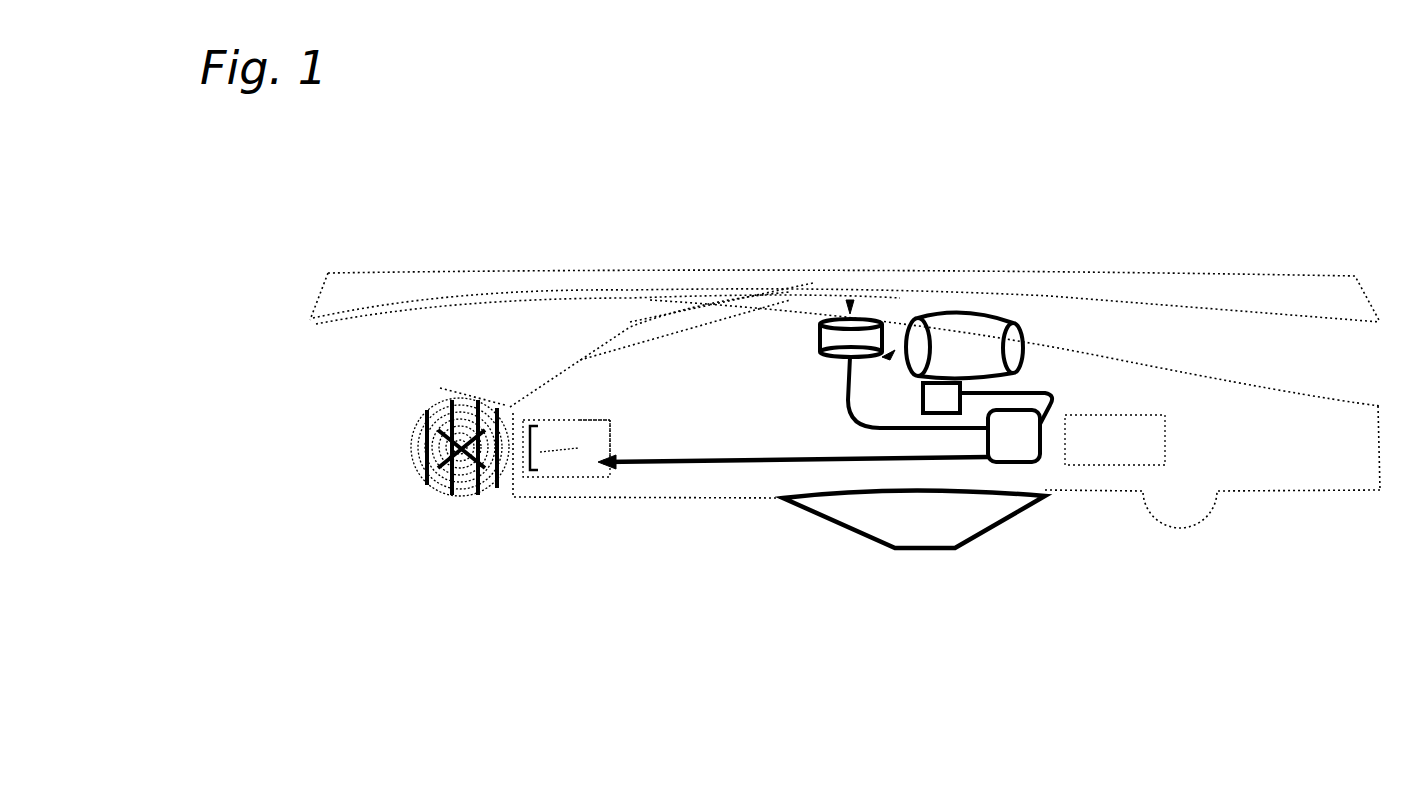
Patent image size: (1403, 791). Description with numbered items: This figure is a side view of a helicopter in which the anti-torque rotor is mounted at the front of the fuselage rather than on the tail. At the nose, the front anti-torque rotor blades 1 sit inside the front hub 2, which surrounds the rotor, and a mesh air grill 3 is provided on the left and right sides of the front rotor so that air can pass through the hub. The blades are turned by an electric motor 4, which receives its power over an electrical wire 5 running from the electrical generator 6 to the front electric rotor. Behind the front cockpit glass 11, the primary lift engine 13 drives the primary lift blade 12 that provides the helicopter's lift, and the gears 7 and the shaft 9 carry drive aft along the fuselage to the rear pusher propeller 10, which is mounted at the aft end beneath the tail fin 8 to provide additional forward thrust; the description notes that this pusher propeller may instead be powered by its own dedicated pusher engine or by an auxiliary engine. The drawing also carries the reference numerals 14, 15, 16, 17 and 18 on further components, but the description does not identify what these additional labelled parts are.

The front anti-torque rotor blades 1 is at (418, 417).
The front hub 2 is at (443, 388).
The mesh air grill 3 is at (410, 472).
The electric motor 4 is at (450, 497).
The electrical wire 5 is at (835, 432).
The electrical generator 6 is at (907, 440).
The gears 7 is at (1020, 470).
The tail fin 8 is at (1188, 522).
The shaft 9 is at (1137, 440).
The rear pusher propeller 10 is at (1050, 382).
The front cockpit glass 11 is at (688, 318).
The primary lift blade 12 is at (485, 285).
The primary lift engine 13 is at (833, 320).
The storage tank 14 is at (963, 336).
The valve 15 is at (933, 398).
The roof line 16 is at (793, 280).
The tank 17 is at (918, 522).
The turbine wheel 18 is at (420, 434).